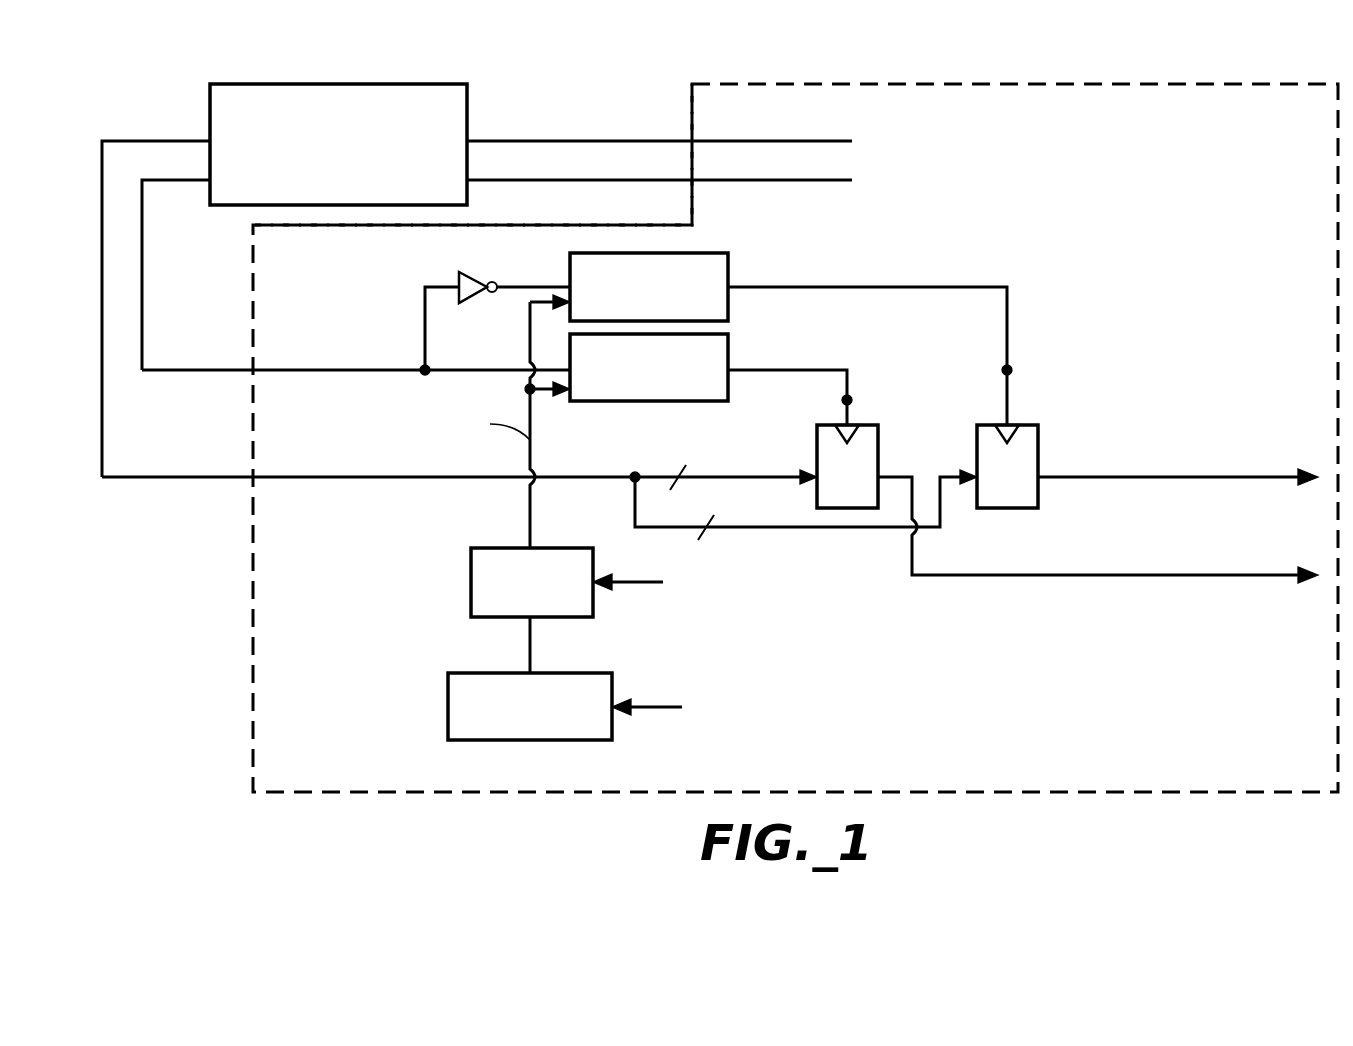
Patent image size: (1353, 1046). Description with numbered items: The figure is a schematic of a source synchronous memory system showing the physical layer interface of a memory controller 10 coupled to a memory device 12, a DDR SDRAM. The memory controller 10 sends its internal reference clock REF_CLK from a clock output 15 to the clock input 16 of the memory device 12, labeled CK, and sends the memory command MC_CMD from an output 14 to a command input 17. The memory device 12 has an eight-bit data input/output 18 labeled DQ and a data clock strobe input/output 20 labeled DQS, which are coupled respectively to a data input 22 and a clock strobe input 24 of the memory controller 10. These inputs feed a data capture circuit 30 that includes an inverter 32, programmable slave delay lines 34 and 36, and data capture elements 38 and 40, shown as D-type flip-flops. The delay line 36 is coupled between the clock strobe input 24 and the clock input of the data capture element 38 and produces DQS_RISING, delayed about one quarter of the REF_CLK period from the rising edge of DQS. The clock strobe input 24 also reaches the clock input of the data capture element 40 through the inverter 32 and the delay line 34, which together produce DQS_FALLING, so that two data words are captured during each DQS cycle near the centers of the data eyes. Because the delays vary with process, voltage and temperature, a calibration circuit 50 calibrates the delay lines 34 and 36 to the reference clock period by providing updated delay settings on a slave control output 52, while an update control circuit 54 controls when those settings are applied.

The memory controller 10 is at (684, 92).
The memory device 12 is at (467, 118).
The output 14 is at (805, 180).
The clock output 15 is at (805, 141).
The clock input 16 is at (588, 141).
The command input 17 is at (588, 180).
The data input/output 18 is at (102, 135).
The data clock strobe input/output 20 is at (142, 190).
The data input 22 is at (195, 479).
The clock strobe input 24 is at (195, 372).
The data capture circuit 30 is at (1150, 312).
The inverter 32 is at (470, 272).
The programmable slave delay line 34 is at (703, 253).
The programmable slave delay line 36 is at (593, 401).
The data capture element 38 is at (858, 425).
The data capture element 40 is at (1000, 425).
The calibration circuit 50 is at (555, 740).
The slave control output 52 is at (530, 652).
The update control circuit 54 is at (555, 617).